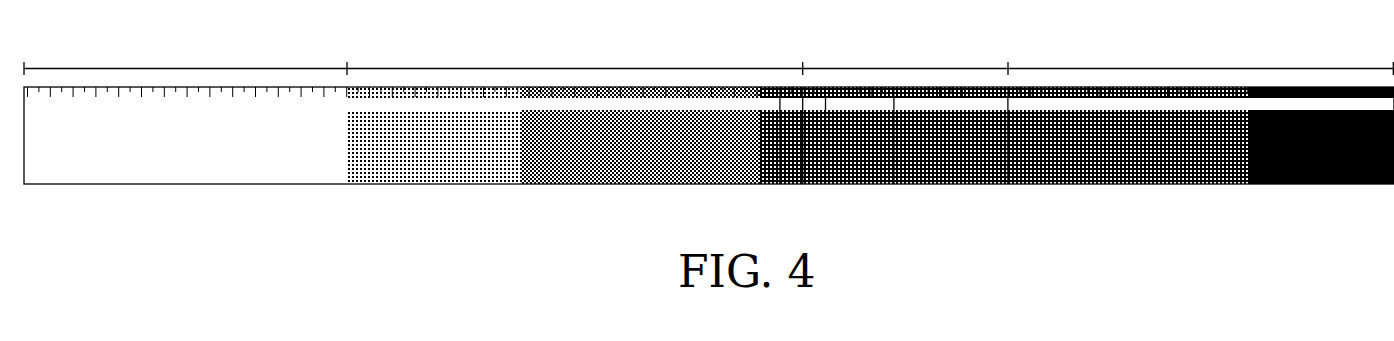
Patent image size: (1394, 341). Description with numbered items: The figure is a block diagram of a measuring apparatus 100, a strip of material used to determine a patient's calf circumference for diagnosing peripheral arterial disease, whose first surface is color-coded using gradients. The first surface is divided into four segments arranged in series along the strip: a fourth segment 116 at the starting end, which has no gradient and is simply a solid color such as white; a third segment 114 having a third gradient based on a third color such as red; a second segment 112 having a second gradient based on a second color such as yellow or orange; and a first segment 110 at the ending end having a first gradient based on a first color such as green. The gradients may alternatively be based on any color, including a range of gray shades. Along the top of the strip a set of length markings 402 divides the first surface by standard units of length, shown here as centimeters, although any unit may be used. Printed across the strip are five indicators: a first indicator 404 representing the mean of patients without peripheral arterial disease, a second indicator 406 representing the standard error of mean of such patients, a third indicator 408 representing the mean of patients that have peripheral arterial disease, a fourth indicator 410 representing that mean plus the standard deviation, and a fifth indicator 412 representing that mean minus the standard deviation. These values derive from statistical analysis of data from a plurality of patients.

The measuring apparatus 100 is at (67, 216).
The first segment 110 is at (1245, 68).
The second segment 112 is at (863, 68).
The third segment 114 is at (656, 68).
The fourth segment 116 is at (185, 68).
The length markings 402 is at (292, 112).
The first indicator 404 is at (1008, 172).
The second indicator 406 is at (894, 172).
The third indicator 408 is at (800, 172).
The fourth indicator 410 is at (826, 172).
The fifth indicator 412 is at (778, 167).